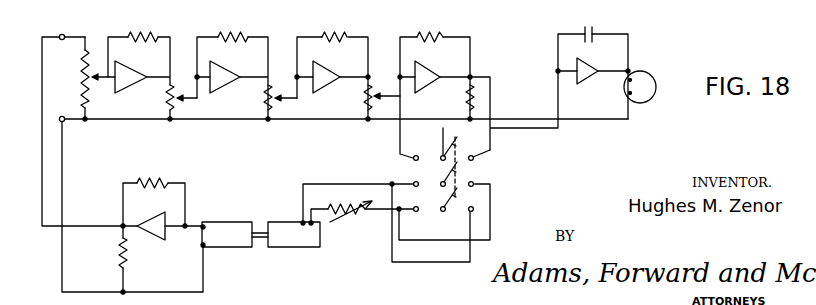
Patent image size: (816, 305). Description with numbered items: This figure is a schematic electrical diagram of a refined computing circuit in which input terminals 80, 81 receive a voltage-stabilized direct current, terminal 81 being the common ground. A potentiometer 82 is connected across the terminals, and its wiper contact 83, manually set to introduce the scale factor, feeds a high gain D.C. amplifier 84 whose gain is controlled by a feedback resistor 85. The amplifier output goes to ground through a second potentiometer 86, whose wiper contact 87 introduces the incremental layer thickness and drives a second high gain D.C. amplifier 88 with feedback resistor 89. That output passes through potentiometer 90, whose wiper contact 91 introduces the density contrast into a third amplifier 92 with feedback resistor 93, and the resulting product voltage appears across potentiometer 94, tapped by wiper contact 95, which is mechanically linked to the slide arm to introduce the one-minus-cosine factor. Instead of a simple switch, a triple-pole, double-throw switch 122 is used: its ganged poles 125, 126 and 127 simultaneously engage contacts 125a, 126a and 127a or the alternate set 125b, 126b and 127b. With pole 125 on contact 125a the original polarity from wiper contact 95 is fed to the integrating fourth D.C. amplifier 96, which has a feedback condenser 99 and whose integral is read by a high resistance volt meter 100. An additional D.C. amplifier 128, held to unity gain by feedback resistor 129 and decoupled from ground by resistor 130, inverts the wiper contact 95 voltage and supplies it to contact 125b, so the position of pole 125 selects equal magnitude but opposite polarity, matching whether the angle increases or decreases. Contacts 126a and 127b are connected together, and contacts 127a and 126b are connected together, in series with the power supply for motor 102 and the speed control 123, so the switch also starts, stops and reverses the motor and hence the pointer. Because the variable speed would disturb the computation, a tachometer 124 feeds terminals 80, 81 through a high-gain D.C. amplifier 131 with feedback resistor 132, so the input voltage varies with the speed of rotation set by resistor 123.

The input terminal 80 is at (62, 34).
The input terminal 81 is at (62, 116).
The potentiometer 82 is at (87, 56).
The wiper contact 83 is at (101, 80).
The high gain D.C. amplifier 84 is at (132, 70).
The feedback resistor 85 is at (143, 33).
The second potentiometer 86 is at (167, 92).
The wiper contact 87 is at (190, 99).
The second high gain D.C. amplifier 88 is at (226, 69).
The feedback resistor 89 is at (235, 33).
The potentiometer 90 is at (272, 103).
The wiper contact 91 is at (280, 96).
The third high gain D.C. amplifier 92 is at (329, 69).
The feedback resistor 93 is at (335, 33).
The potentiometer 94 is at (365, 101).
The wiper contact 95 is at (388, 94).
The fourth D.C. amplifier 96 is at (590, 63).
The feedback condenser 99 is at (592, 30).
The high resistance volt meter 100 is at (651, 72).
The motor 102 is at (284, 221).
The triple-pole, double-throw switch 122 is at (514, 158).
The speed control 123 is at (350, 222).
The tachometer 124 is at (234, 220).
The pole 125 is at (447, 133).
The contact 125a is at (413, 157).
The contact 125b is at (474, 156).
The pole 126 is at (443, 181).
The contact 126a is at (413, 183).
The contact 126b is at (474, 183).
The pole 127 is at (447, 212).
The contact 127a is at (414, 212).
The contact 127b is at (474, 208).
The additional D.C. amplifier 128 is at (431, 69).
The feedback resistor 129 is at (443, 19).
The resistor 130 is at (474, 96).
The high-gain D.C. amplifier 131 is at (156, 218).
The feedback resistor 132 is at (160, 175).